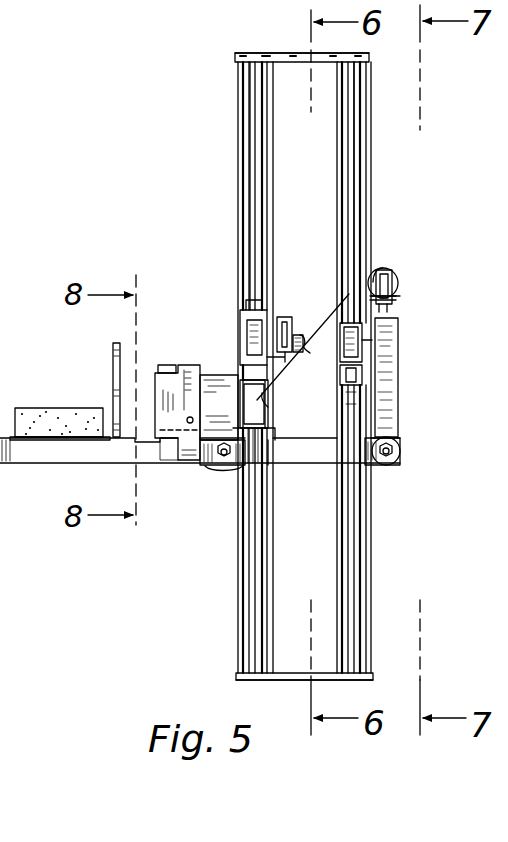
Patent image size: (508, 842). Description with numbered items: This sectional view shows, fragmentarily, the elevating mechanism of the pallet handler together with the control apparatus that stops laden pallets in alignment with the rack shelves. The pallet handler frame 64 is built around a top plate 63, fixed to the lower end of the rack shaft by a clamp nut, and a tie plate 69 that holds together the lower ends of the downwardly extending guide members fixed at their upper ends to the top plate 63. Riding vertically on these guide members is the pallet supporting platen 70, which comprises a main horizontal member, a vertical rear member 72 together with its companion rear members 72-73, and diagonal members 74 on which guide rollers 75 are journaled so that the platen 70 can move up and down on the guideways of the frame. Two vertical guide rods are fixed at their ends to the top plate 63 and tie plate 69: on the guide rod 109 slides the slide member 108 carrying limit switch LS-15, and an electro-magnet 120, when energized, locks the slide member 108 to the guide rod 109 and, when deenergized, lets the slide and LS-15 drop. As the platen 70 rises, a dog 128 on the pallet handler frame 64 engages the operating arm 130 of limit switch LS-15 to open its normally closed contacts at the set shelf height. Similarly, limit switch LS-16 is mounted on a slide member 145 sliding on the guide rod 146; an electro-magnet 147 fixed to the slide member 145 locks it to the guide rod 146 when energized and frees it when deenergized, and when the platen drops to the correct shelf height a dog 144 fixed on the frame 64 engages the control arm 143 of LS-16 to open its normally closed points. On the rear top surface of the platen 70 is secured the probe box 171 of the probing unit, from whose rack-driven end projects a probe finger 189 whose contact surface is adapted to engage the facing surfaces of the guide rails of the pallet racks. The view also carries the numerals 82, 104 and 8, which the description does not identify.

The top plate 63 is at (271, 57).
The pallet handler frame 64 is at (372, 152).
The tie plate 69 is at (292, 680).
The guide rod 146 is at (262, 161).
The guide rod 109 is at (352, 240).
The pallet supporting platen 70 is at (48, 450).
The block 82 is at (68, 437).
The base plate 104 is at (54, 408).
The post 8 is at (60, 390).
The probe box 171 is at (166, 381).
The probe finger 189 is at (170, 458).
The slide member 145 is at (266, 458).
The guide rollers 75 is at (400, 284).
The vertical rear member 72 is at (390, 270).
The dog 128 is at (392, 301).
The operating arm 130 is at (360, 332).
The limit switch LS-15 is at (372, 340).
The vertical rear members 72-73 is at (385, 356).
The electro-magnet 120 is at (362, 390).
The limit switch LS-16 is at (236, 329).
The slide member 108 is at (296, 326).
The dog 144 is at (298, 297).
The diagonal members 74 is at (308, 352).
The control arm 143 is at (274, 382).
The electro-magnet 147 is at (266, 396).